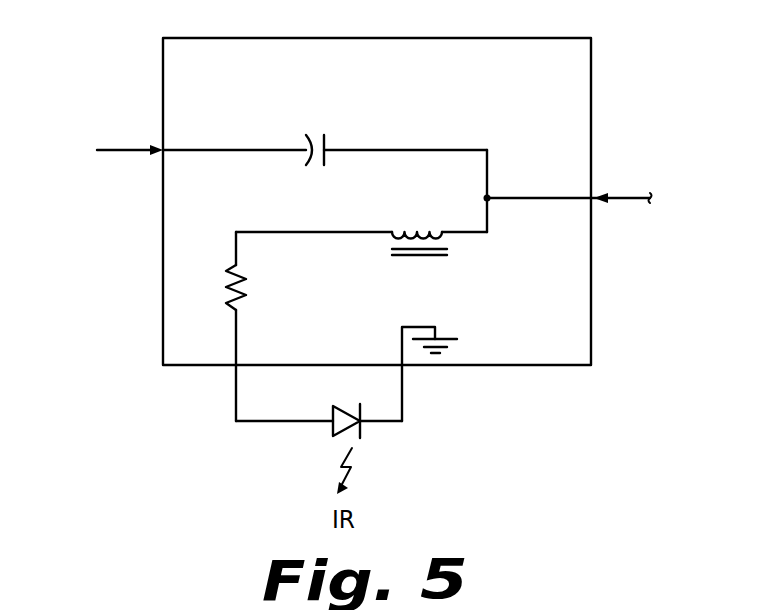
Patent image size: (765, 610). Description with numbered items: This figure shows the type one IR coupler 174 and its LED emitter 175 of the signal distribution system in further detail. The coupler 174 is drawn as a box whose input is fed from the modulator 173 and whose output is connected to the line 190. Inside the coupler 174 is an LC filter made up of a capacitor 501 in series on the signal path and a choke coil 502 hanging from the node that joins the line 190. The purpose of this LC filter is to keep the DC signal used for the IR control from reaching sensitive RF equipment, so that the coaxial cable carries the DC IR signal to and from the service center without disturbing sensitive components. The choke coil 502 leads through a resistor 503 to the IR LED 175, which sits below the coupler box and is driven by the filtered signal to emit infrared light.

The type 1 IR coupler 174 is at (592, 77).
The modulator 173 is at (86, 133).
The capacitor 501 is at (326, 131).
The line 190 is at (602, 187).
The choke coil 502 is at (455, 256).
The resistor 503 is at (250, 282).
The LED emitter 175 is at (360, 424).